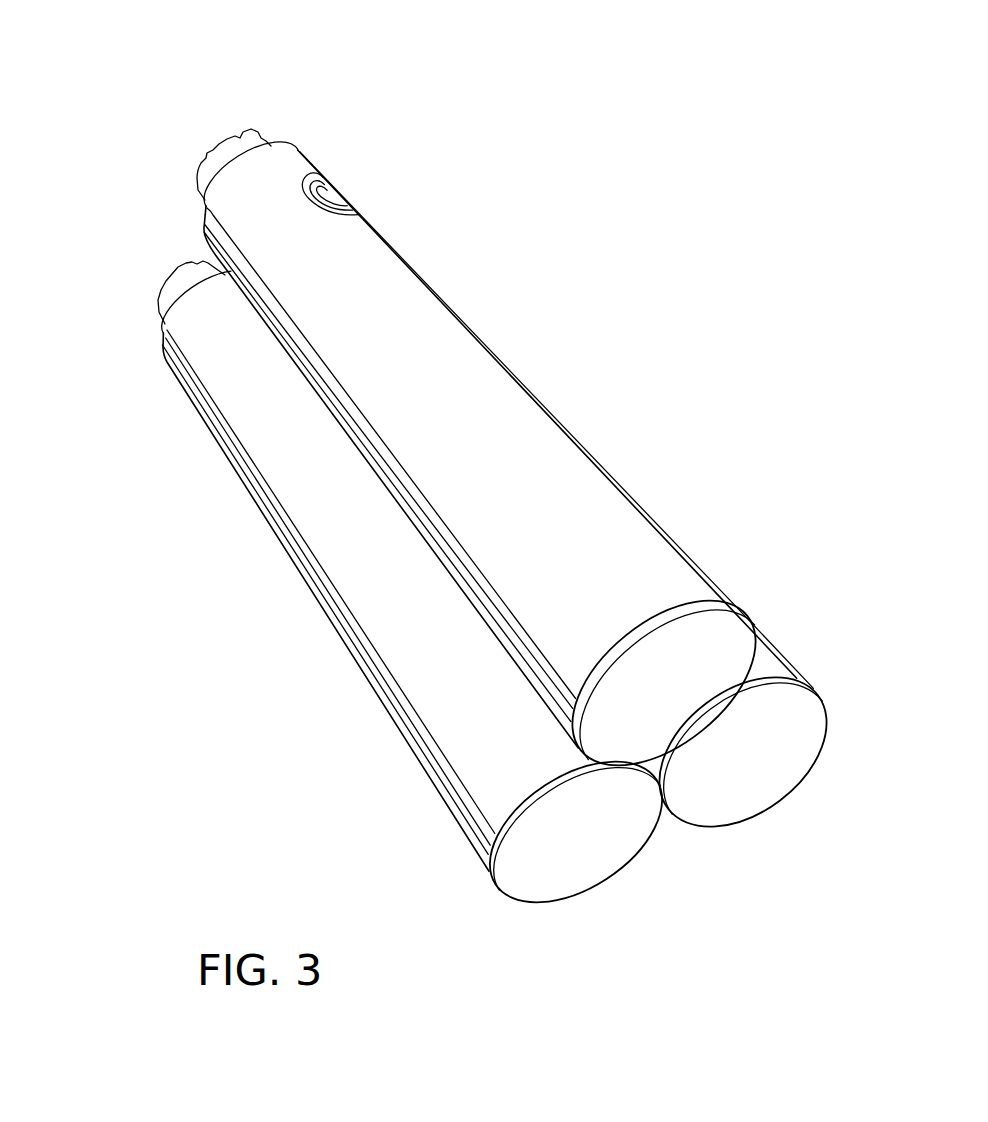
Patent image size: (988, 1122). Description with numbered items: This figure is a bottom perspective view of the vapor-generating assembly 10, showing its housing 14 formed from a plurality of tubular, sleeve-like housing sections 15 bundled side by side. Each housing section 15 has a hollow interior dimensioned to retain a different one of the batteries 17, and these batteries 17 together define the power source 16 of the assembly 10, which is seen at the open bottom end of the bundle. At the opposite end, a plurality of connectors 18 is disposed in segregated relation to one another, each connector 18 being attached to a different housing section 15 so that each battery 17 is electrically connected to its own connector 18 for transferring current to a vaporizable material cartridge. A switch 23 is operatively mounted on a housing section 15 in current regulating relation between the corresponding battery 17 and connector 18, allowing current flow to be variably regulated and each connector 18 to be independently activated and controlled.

The assembly 10 is at (467, 536).
The housing 14 is at (381, 499).
The housing sections 15 is at (500, 413).
The power source 16 is at (703, 880).
The batteries 17 is at (687, 665).
The connectors 18 is at (225, 147).
The switches 23 is at (347, 185).